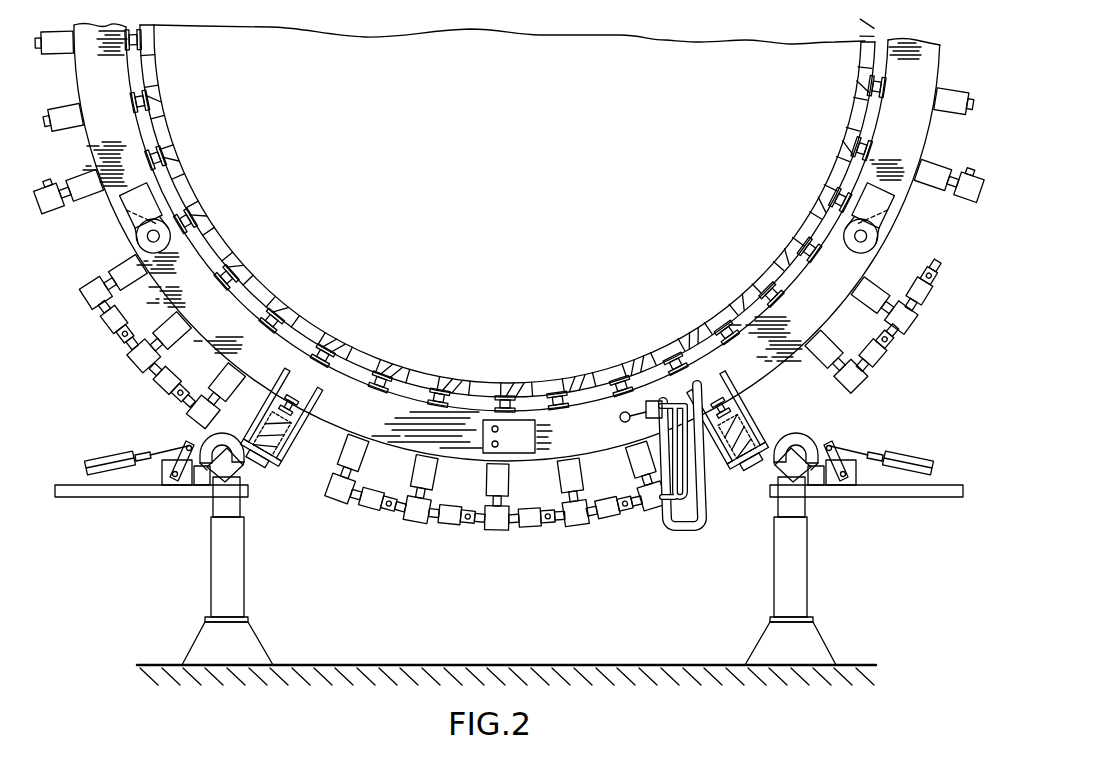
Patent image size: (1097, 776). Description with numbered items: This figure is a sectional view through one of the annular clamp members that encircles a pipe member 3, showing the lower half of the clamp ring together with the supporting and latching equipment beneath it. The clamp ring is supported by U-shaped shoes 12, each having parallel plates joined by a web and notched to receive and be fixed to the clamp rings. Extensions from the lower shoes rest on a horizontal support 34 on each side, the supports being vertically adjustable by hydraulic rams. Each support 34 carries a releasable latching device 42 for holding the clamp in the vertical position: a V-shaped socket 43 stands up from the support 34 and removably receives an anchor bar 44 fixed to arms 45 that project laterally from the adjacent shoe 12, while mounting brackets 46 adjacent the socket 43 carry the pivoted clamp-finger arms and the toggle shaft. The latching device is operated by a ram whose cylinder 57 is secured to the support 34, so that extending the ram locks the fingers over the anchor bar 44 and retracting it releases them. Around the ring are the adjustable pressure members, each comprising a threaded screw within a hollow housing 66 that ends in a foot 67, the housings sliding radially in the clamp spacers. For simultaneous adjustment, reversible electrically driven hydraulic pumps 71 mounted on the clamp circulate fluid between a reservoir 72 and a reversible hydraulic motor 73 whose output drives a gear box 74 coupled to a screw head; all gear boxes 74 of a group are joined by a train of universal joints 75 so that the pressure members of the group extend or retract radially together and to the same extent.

The pipe member 3 is at (413, 374).
The U-shaped shoe 12 is at (303, 437).
The horizontal support 34 is at (97, 498).
The releasable latching device 42 is at (148, 437).
The V-shaped socket 43 is at (245, 471).
The anchor bar 44 is at (222, 462).
The arm 45 is at (212, 434).
The mounting bracket 46 is at (853, 477).
The cylinder 57 is at (122, 460).
The hollow housing 66 is at (508, 480).
The foot 67 is at (563, 383).
The reversible electrically driven hydraulic pump 71 is at (620, 418).
The reservoir 72 is at (650, 401).
The reversible hydraulic motor 73 is at (652, 518).
The gear box 74 is at (410, 500).
The train of universal joints 75 is at (535, 533).